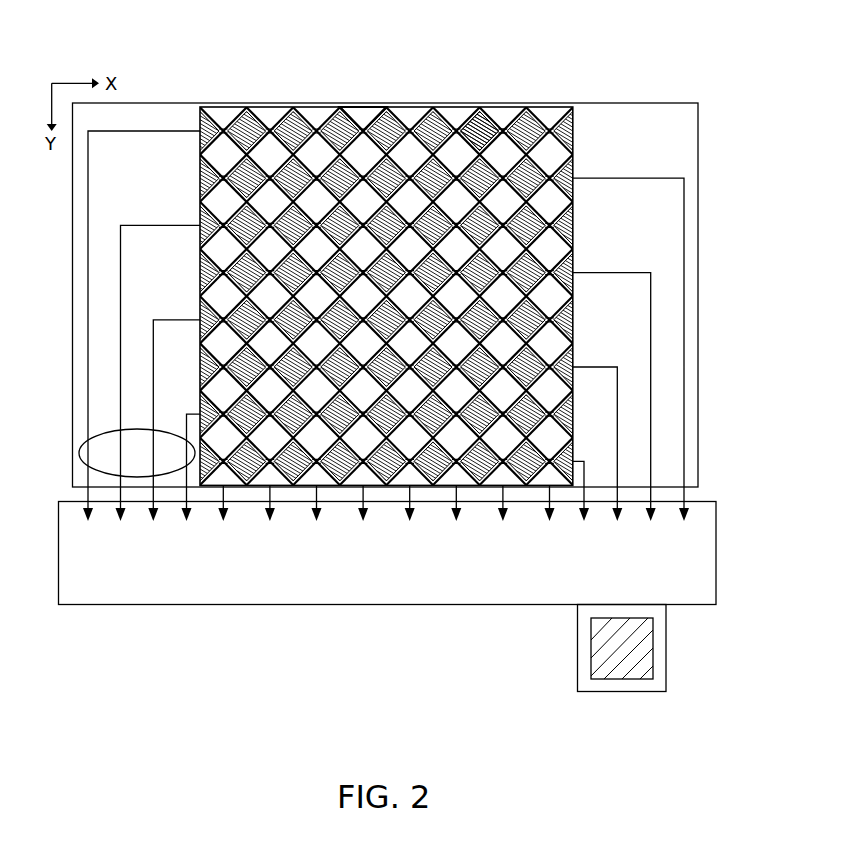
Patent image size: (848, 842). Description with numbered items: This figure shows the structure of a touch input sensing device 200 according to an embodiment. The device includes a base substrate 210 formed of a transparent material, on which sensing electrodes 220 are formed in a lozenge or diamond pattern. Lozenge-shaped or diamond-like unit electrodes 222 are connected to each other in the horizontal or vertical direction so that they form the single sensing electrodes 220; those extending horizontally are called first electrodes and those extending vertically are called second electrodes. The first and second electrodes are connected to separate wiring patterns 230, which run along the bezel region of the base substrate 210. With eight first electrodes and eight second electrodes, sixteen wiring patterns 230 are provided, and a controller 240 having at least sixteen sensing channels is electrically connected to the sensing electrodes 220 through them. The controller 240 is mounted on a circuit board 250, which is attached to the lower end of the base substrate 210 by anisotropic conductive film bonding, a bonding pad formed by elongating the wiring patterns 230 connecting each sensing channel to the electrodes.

The touch input sensing device 200 is at (578, 80).
The base substrate 210 is at (270, 103).
The sensing electrodes 220 is at (363, 113).
The unit electrodes 222 is at (478, 113).
The wiring patterns 230 is at (90, 432).
The controller 240 is at (619, 669).
The circuit board 250 is at (431, 604).